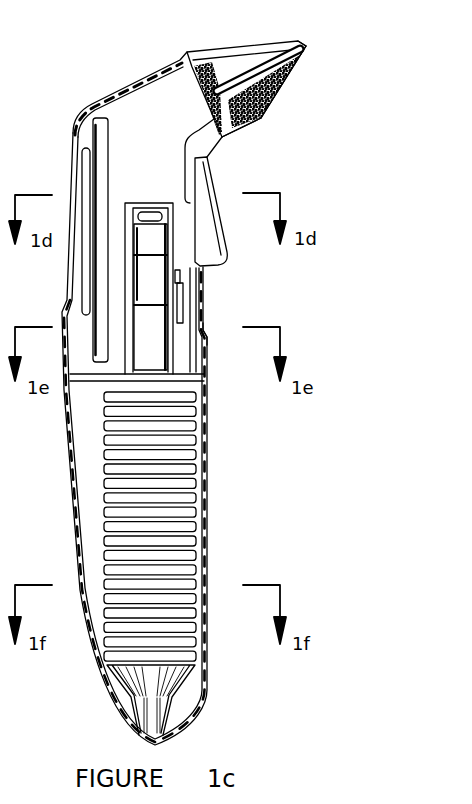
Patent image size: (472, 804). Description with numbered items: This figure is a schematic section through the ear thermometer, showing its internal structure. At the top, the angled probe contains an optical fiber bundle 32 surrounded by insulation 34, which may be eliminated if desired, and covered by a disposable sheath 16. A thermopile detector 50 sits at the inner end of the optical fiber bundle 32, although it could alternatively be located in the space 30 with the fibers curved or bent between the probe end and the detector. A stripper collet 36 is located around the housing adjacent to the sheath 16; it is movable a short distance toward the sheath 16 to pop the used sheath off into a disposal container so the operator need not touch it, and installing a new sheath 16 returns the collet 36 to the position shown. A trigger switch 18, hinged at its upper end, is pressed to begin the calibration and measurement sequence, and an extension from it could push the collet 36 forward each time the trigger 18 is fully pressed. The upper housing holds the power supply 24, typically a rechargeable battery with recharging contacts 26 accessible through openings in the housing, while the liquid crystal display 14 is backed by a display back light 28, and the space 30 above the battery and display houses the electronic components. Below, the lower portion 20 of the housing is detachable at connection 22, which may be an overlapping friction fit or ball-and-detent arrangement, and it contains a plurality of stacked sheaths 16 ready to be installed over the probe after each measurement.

The display 14 is at (80, 180).
The sheath 16 is at (300, 44).
The trigger switch 18 is at (223, 213).
The lower portion 20 is at (67, 500).
The connection 22 is at (205, 338).
The power supply 24 is at (152, 293).
The recharging contacts 26 is at (153, 205).
The display back light 28 is at (90, 148).
The space 30 is at (158, 146).
The optical fiber bundle 32 is at (307, 44).
The insulation 34 is at (272, 110).
The stripper collet 36 is at (234, 130).
The thermopile detector 50 is at (208, 90).